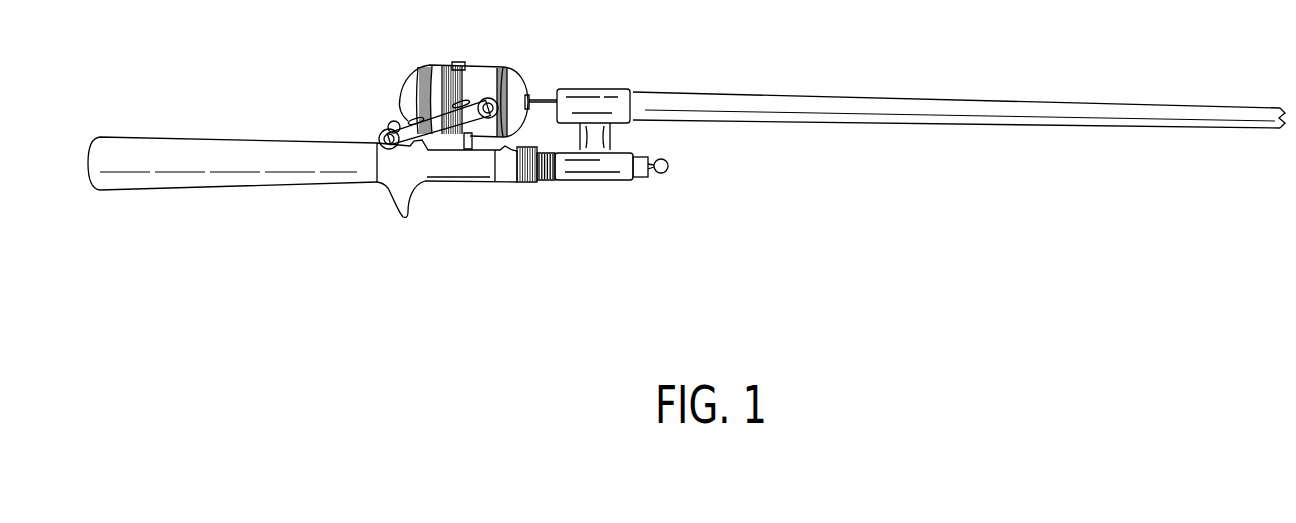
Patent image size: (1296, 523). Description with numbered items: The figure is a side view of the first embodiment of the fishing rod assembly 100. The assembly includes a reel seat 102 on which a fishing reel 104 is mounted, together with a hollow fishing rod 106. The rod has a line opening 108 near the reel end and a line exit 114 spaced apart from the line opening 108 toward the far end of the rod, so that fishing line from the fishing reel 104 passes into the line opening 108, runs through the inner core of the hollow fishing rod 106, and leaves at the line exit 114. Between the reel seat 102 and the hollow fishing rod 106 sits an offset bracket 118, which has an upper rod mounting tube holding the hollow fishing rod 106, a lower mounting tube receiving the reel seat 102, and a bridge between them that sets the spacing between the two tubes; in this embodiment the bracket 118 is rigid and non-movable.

The fishing rod assembly 100 is at (727, 214).
The reel seat 102 is at (470, 170).
The fishing reel 104 is at (482, 78).
The hollow fishing rod 106 is at (862, 108).
The line opening 108 is at (547, 100).
The line exit 114 is at (1220, 107).
The offset bracket 118 is at (603, 193).